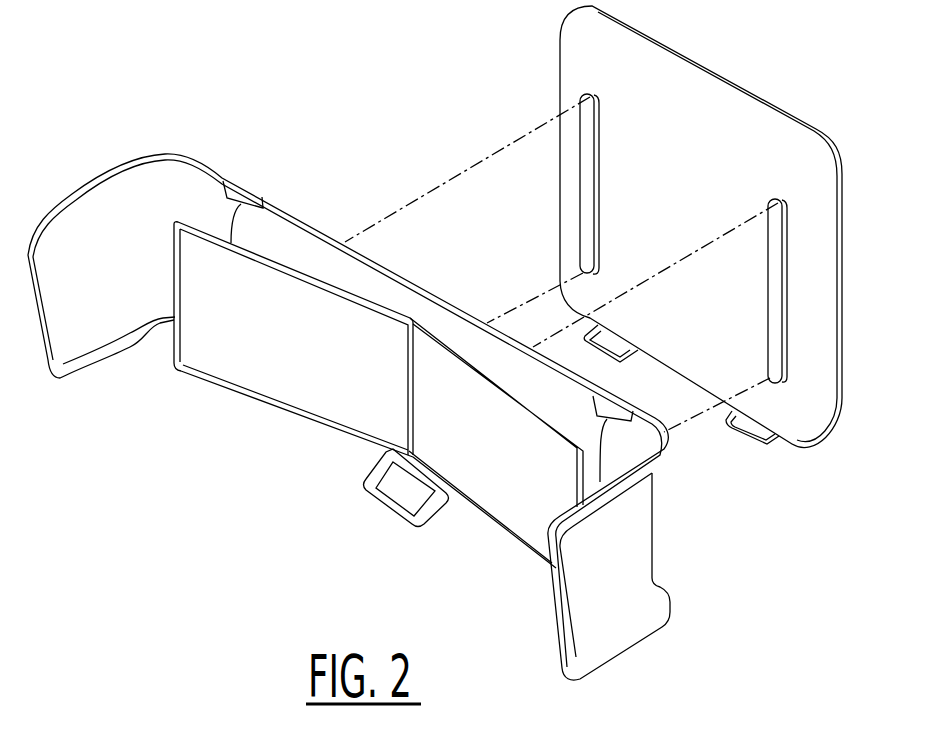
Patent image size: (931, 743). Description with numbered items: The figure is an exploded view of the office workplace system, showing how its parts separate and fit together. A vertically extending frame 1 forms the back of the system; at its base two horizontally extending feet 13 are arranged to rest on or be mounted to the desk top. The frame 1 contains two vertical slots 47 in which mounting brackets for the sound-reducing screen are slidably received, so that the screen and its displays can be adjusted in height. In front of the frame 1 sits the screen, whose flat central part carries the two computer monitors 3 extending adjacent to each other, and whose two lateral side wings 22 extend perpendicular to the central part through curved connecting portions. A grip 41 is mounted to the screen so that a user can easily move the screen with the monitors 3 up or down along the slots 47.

The frame 1 is at (580, 58).
The vertical slot 47 is at (777, 203).
The foot 13 is at (758, 420).
The lateral side wing 22 is at (92, 220).
The computer monitor 3 is at (213, 350).
The grip 41 is at (392, 500).